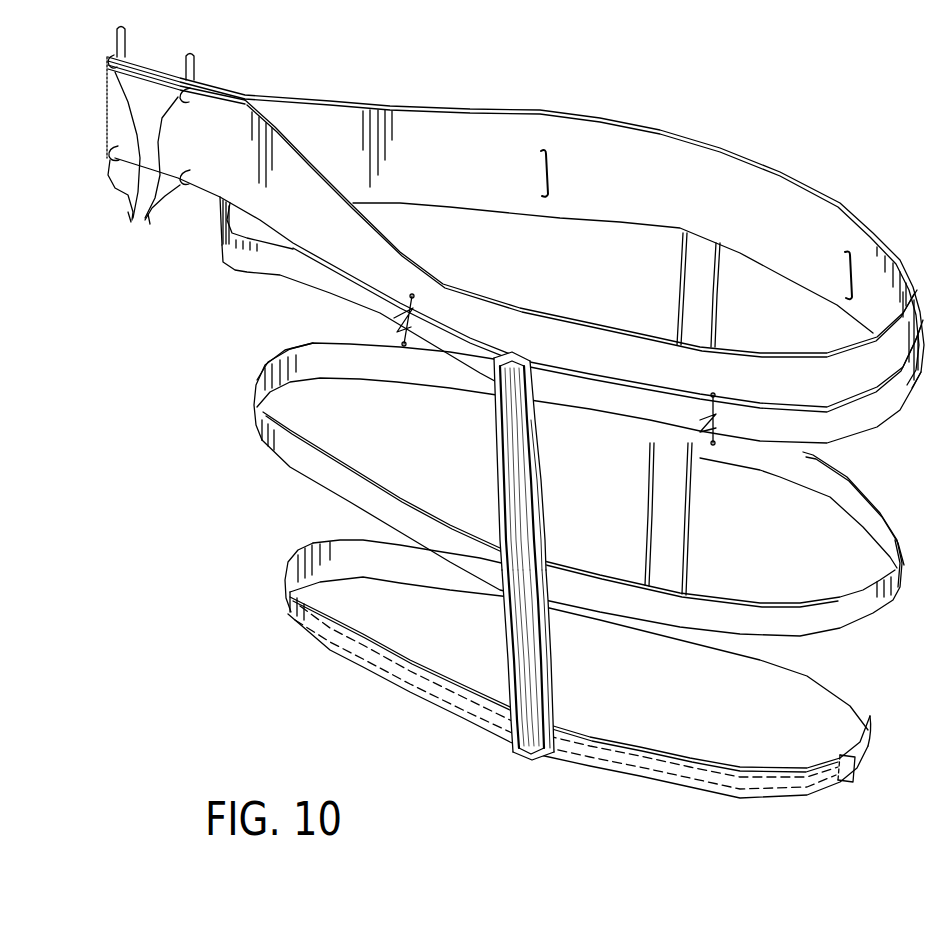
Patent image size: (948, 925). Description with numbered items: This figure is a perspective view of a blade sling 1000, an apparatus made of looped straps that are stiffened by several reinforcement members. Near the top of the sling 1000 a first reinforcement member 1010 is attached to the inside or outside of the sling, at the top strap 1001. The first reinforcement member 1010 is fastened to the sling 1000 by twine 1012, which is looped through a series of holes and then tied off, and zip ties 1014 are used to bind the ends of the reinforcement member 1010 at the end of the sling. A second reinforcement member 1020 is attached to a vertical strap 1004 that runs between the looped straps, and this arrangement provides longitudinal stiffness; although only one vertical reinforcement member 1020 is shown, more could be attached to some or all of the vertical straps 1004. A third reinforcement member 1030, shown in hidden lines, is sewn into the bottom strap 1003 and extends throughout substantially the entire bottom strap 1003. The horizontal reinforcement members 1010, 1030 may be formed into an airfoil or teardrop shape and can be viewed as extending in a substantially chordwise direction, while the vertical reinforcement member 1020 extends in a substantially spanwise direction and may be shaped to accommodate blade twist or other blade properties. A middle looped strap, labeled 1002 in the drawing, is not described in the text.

The blade sling 1000 is at (768, 70).
The top strap 1001 is at (280, 268).
The second band 1002 is at (300, 455).
The bottom strap 1003 is at (827, 690).
The vertical strap 1004 is at (533, 463).
The first reinforcement member 1010 is at (516, 251).
The twine 1012 is at (540, 174).
The zip ties 1014 is at (147, 137).
The second reinforcement member 1020 is at (535, 682).
The third reinforcement member 1030 is at (330, 638).